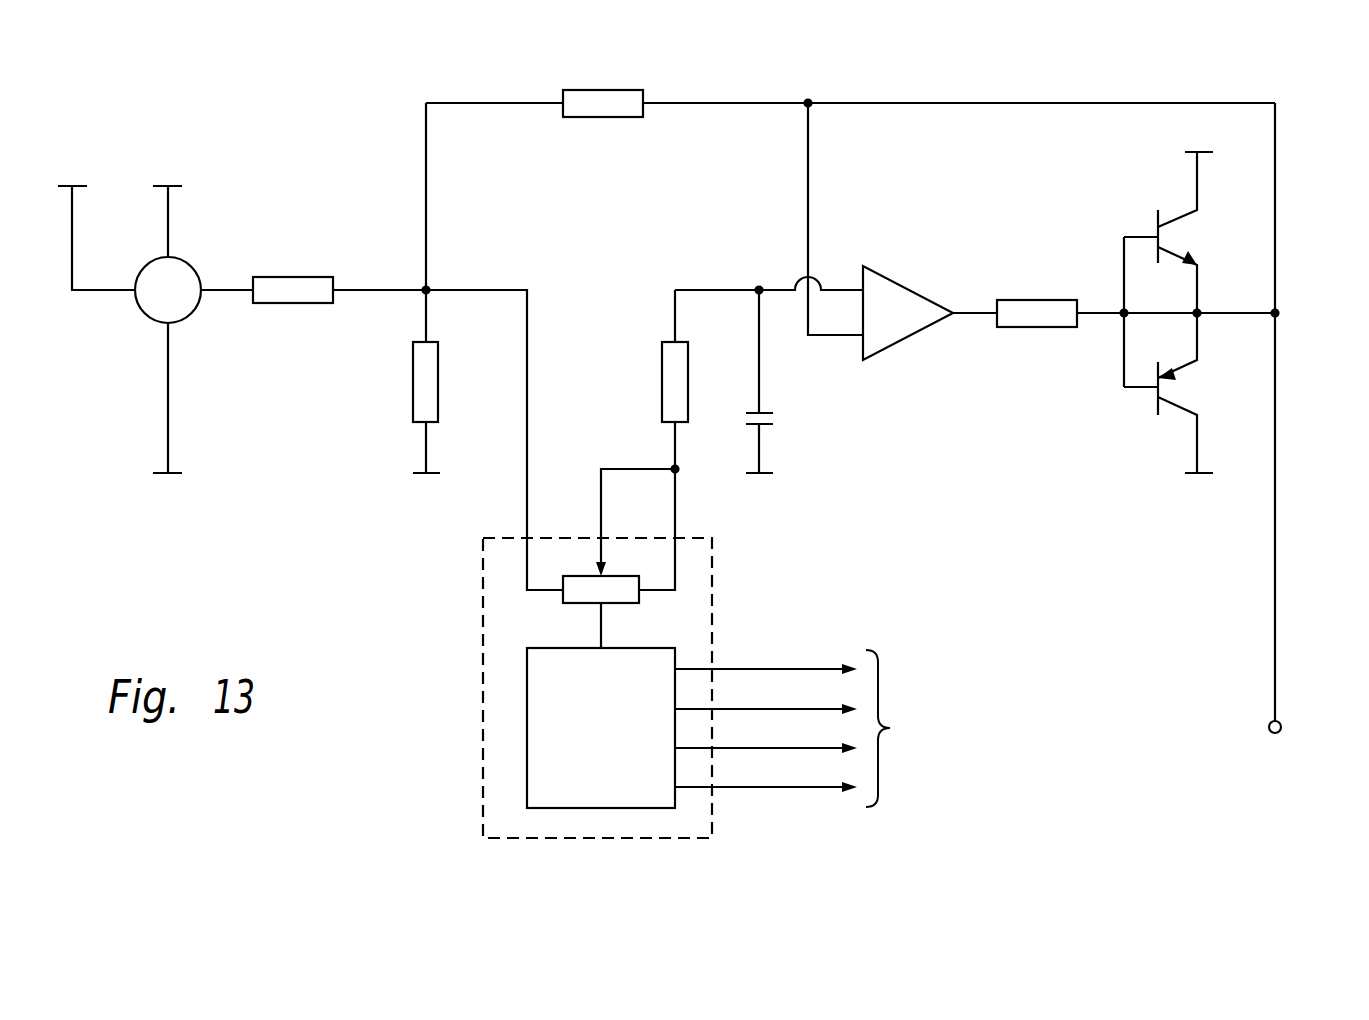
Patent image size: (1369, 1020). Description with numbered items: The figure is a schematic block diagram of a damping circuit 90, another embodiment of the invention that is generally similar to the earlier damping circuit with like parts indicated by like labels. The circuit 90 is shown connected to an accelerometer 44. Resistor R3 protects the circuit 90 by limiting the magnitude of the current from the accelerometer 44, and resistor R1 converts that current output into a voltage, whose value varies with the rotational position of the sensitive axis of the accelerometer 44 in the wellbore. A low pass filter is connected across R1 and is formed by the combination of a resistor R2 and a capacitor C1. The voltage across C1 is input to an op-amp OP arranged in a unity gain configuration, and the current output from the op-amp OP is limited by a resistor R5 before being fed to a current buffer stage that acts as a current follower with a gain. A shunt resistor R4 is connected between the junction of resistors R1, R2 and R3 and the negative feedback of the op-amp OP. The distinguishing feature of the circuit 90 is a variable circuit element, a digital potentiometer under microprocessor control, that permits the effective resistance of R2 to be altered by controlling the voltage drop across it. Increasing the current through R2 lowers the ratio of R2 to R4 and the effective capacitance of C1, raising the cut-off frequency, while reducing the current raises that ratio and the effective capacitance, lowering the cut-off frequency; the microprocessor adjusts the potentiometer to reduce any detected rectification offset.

The damping circuit 90 is at (312, 138).
The accelerometer 44 is at (140, 317).
The resistor R1 is at (456, 294).
The resistor R2 is at (695, 379).
The resistor R3 is at (313, 273).
The shunt resistor R4 is at (850, 87).
The resistor R5 is at (1114, 297).
The capacitor C1 is at (788, 388).
The op-amp OP is at (908, 313).